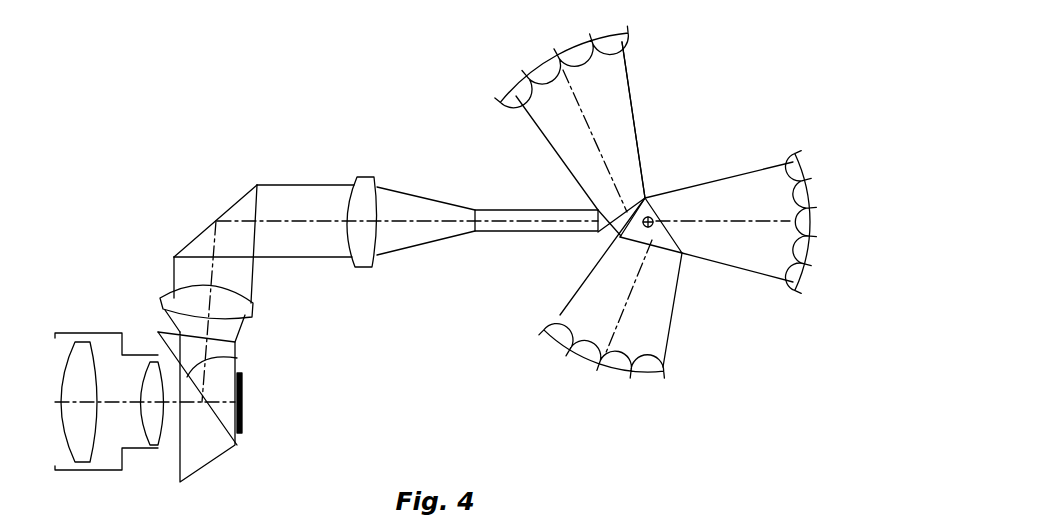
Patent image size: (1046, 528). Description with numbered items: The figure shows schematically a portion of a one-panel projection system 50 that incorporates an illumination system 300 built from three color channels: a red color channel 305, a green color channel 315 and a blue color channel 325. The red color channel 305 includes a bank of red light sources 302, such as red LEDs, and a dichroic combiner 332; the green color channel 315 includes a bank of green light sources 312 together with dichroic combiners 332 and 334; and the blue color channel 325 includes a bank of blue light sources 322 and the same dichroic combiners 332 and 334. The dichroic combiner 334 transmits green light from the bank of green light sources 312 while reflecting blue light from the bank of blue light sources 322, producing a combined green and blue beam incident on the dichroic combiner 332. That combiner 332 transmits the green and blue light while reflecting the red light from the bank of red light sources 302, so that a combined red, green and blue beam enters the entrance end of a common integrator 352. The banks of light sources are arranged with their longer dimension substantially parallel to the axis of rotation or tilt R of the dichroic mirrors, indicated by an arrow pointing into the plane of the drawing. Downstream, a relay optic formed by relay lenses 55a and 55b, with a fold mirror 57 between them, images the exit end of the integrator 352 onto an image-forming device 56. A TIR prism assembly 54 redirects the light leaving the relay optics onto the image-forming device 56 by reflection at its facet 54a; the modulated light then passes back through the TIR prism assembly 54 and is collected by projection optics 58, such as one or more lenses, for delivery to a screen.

The one-panel projection system 50 is at (152, 186).
The fold mirror 57 is at (232, 208).
The relay lens 55a is at (364, 178).
The relay lens 55b is at (167, 297).
The projection optics 58 is at (110, 343).
The TIR prism assembly 54 is at (203, 450).
The facet 54a is at (237, 358).
The image-forming device 56 is at (242, 389).
The common integrator 352 is at (518, 210).
The bank of red light sources 302 is at (528, 63).
The red color channel 305 is at (637, 135).
The bank of green light sources 312 is at (812, 158).
The green color channel 315 is at (731, 180).
The axis of rotation R is at (658, 207).
The dichroic combiner 332 is at (615, 238).
The dichroic combiner 334 is at (677, 240).
The blue color channel 325 is at (673, 315).
The bank of blue light sources 322 is at (631, 378).
The illumination system 300 is at (568, 425).